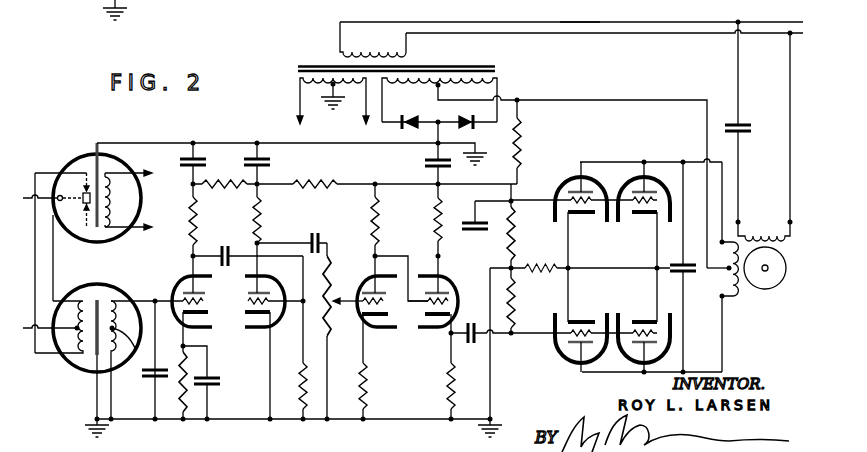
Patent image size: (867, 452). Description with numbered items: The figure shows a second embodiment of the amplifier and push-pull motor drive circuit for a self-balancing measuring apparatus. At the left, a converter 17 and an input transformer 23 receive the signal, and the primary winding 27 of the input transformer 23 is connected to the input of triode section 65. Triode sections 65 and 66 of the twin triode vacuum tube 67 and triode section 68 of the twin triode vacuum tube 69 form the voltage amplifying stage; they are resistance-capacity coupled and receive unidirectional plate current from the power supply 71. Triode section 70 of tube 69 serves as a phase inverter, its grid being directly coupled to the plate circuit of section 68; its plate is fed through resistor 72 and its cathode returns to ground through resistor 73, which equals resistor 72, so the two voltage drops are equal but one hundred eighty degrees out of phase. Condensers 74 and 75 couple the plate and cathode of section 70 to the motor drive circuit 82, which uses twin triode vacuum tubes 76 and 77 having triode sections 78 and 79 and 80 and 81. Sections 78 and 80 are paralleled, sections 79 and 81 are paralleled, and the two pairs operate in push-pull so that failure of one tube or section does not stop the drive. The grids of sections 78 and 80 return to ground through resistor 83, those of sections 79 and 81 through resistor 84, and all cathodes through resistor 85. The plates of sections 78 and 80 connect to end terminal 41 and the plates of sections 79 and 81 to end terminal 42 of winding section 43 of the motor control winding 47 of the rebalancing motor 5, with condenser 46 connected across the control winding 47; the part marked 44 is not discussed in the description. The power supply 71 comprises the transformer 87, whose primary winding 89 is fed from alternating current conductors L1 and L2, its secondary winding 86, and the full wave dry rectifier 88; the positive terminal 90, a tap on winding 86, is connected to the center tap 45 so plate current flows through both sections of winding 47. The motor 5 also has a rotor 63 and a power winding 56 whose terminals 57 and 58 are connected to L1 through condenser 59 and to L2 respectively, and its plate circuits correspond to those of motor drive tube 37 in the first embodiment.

The rebalancing motor 5 is at (772, 303).
The converter 17 is at (81, 155).
The input transformer 23 is at (91, 283).
The primary winding 27 is at (134, 347).
The motor drive tube 37 is at (580, 11).
The end terminal 41 is at (723, 240).
The end terminal 42 is at (723, 299).
The winding section 43 is at (724, 269).
The winding lead 44 is at (739, 289).
The center tap 45 is at (726, 270).
The condenser 46 is at (667, 265).
The control winding 47 is at (722, 283).
The power winding 56 is at (770, 233).
The terminal 57 is at (740, 220).
The terminal 58 is at (789, 220).
The condenser 59 is at (753, 126).
The rotor 63 is at (779, 277).
The triode section 65 is at (185, 314).
The triode section 66 is at (271, 314).
The twin triode vacuum tube 67 is at (182, 276).
The triode section 68 is at (362, 315).
The twin triode vacuum tube 69 is at (367, 277).
The triode section 70 is at (460, 291).
The power supply 71 is at (507, 93).
The resistor 72 is at (432, 215).
The resistor 73 is at (445, 381).
The condenser 74 is at (457, 224).
The condenser 75 is at (474, 347).
The twin triode vacuum tube 76 is at (565, 182).
The twin triode vacuum tube 77 is at (633, 178).
The triode section 78 is at (558, 199).
The triode section 79 is at (563, 340).
The triode section 80 is at (662, 198).
The triode section 81 is at (660, 337).
The motor drive circuit 82 is at (557, 164).
The resistor 83 is at (498, 233).
The resistor 84 is at (516, 293).
The resistor 85 is at (542, 265).
The secondary winding 86 is at (408, 86).
The transformer 87 is at (462, 65).
The full wave dry rectifier 88 is at (466, 131).
The primary winding 89 is at (377, 50).
The positive terminal 90 is at (437, 88).
The alternating current conductor L1 is at (779, 12).
The alternating current conductor L2 is at (781, 36).